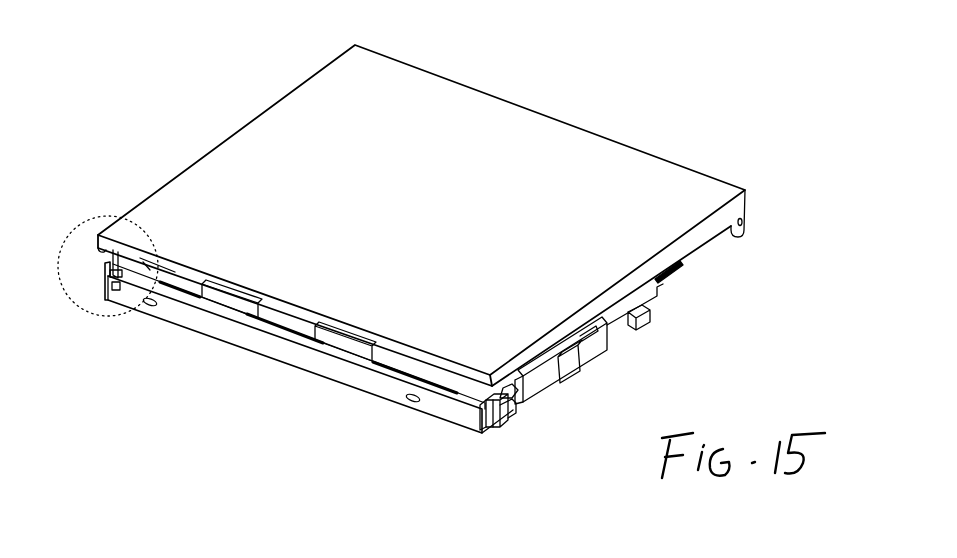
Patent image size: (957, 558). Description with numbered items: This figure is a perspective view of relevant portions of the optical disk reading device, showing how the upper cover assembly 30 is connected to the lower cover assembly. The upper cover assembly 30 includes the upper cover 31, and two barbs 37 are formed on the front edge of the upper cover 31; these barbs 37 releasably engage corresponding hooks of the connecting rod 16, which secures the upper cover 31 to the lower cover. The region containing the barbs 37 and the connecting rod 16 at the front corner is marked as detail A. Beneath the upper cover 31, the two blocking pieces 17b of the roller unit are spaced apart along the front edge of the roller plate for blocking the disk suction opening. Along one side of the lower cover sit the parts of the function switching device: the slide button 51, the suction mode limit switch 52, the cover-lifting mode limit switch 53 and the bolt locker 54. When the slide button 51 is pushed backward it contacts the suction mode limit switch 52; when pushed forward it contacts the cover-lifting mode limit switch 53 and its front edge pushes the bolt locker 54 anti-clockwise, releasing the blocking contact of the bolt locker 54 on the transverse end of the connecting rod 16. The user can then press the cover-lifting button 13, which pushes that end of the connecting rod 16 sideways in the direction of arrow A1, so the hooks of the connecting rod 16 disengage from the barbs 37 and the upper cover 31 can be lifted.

The upper cover assembly 30 is at (421, 199).
The upper cover 31 is at (317, 100).
The connecting rod 16 is at (290, 352).
The blocking pieces 17b is at (224, 305).
The barbs 37 is at (122, 280).
The slide button 51 is at (598, 350).
The suction mode limit switch 52 is at (648, 320).
The cover-lifting button 13 is at (500, 422).
The cover-lifting mode limit switch 53 is at (510, 405).
The bolt locker 54 is at (505, 392).
The detail region A is at (86, 216).
The arrow A1 is at (225, 443).